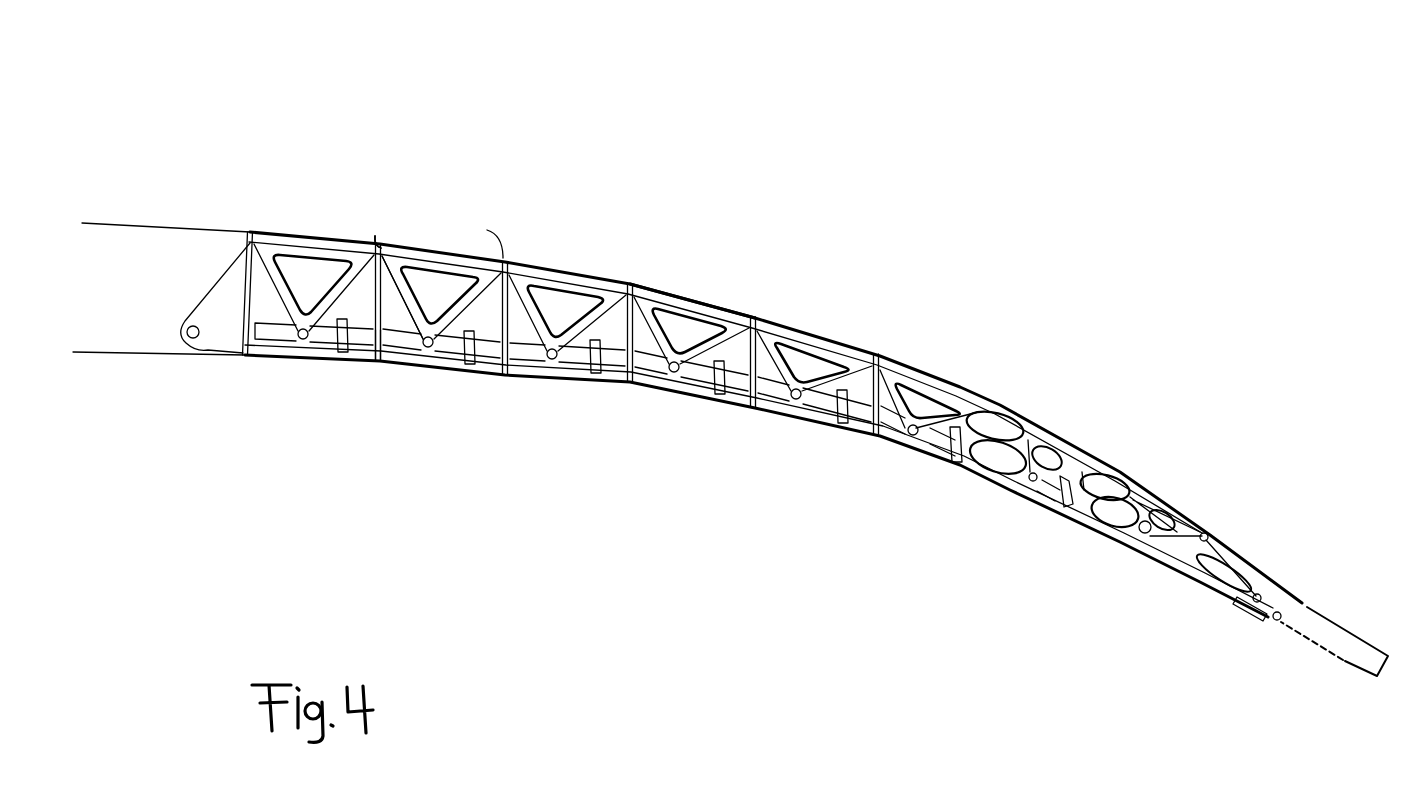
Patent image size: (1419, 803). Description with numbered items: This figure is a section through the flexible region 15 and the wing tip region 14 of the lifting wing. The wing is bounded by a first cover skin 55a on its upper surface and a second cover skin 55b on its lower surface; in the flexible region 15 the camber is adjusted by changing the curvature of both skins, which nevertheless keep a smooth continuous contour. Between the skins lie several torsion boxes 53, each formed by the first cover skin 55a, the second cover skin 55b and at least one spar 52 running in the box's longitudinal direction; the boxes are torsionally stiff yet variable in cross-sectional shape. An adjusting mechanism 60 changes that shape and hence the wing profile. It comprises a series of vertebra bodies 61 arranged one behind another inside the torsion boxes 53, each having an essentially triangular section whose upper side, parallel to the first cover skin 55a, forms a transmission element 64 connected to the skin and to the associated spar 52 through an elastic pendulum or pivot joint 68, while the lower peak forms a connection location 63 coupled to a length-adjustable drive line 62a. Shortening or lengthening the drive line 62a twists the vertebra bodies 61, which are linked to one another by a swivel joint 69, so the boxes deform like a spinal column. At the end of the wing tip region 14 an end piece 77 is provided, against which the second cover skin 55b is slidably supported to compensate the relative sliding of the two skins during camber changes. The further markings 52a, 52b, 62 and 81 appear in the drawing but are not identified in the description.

The wing tip region 14 is at (1220, 440).
The flexible region 15 is at (702, 152).
The spar 52 is at (664, 361).
The upper connection points 52a is at (381, 243).
The lower connection point 52b is at (376, 362).
The torsion boxes 53 is at (680, 330).
The first cover skin 55a is at (782, 324).
The second cover skin 55b is at (780, 410).
The adjusting mechanism 60 is at (691, 428).
The vertebra bodies 61 is at (255, 311).
The tube 62 is at (664, 413).
The drive line 62a is at (408, 345).
The connection location 63 is at (304, 340).
The transmission element 64 is at (440, 297).
The pendulum or pivot joint 68 is at (388, 242).
The vertebra or swivel joint 69 is at (378, 242).
The end piece 77 is at (1305, 603).
The oval openings 81 is at (995, 456).